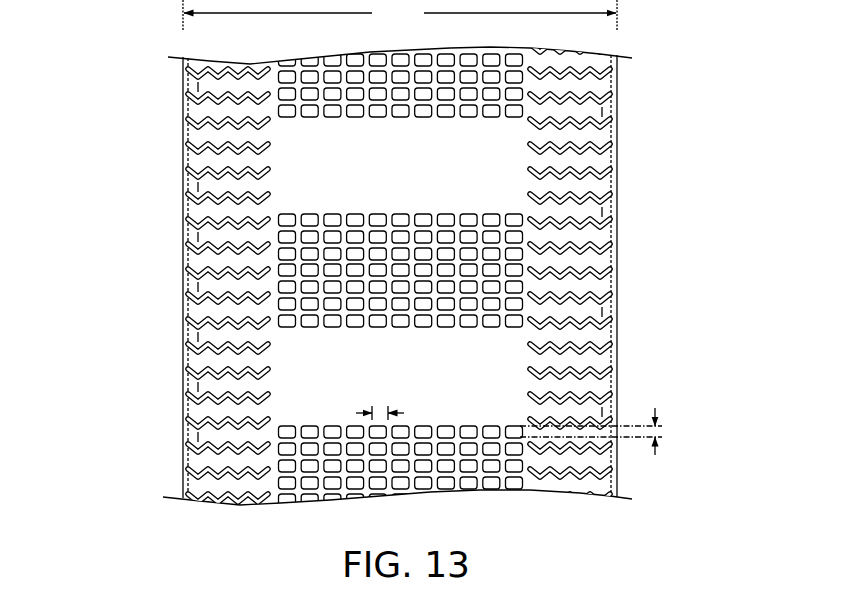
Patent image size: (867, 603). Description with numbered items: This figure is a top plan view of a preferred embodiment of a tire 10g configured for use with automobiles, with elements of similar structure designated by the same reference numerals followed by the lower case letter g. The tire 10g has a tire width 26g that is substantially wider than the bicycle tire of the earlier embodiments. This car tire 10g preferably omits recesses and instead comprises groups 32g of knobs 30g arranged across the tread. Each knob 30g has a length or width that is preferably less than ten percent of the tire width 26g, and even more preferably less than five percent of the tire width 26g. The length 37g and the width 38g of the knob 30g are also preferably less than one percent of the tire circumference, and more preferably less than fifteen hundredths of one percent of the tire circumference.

The tire 10g is at (117, 93).
The tire width 26g is at (400, 15).
The knob 30g is at (515, 212).
The group of knobs 32g is at (458, 345).
The length of the knob 37g is at (674, 430).
The width of the knob 38g is at (376, 401).